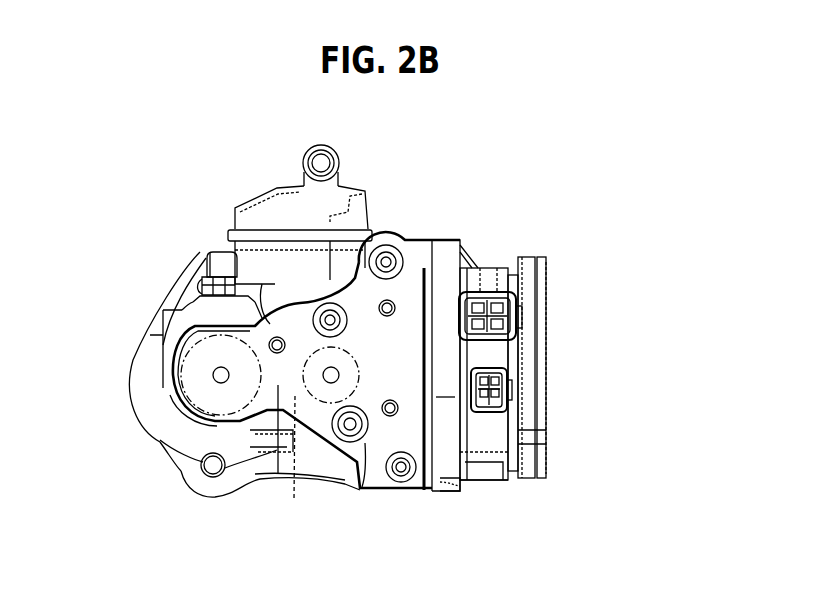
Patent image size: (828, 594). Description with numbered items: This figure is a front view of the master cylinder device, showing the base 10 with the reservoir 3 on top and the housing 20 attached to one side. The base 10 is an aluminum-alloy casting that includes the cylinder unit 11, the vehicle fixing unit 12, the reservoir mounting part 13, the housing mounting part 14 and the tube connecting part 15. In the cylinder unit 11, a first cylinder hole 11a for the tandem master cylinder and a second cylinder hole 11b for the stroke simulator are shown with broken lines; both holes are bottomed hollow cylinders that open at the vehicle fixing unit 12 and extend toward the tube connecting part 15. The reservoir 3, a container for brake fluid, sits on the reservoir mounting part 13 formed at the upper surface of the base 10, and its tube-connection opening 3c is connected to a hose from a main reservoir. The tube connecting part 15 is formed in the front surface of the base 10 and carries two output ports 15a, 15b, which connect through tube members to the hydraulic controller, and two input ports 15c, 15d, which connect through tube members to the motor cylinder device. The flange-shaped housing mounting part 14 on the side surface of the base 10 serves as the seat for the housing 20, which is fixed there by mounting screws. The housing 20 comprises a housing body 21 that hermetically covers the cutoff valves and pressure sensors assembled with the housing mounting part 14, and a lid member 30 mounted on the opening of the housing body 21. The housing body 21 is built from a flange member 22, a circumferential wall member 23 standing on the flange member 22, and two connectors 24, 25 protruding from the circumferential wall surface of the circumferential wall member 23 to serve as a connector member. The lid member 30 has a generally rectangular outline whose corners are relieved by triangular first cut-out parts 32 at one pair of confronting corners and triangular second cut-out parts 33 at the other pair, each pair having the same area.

The reservoir 3 is at (258, 184).
The tube-connection opening 3c is at (326, 146).
The base 10 is at (126, 232).
The cylinder unit 11 is at (157, 443).
The first cylinder hole 11a is at (320, 392).
The second cylinder hole 11b is at (165, 336).
The vehicle fixing unit 12 is at (200, 262).
The reservoir mounting part 13 is at (288, 297).
The housing mounting part 14 is at (430, 244).
The tube connecting part 15 is at (302, 470).
The output port 15a is at (279, 468).
The output port 15b is at (362, 456).
The input port 15c is at (387, 244).
The input port 15d is at (421, 492).
The housing 20 is at (538, 220).
The housing body 21 is at (485, 248).
The flange member 22 is at (447, 478).
The circumferential wall member 23 is at (488, 470).
The connector 24 is at (517, 332).
The connector 25 is at (510, 367).
The lid member 30 is at (546, 290).
The first cut-out part 32 is at (548, 437).
The second cut-out part 33 is at (546, 246).